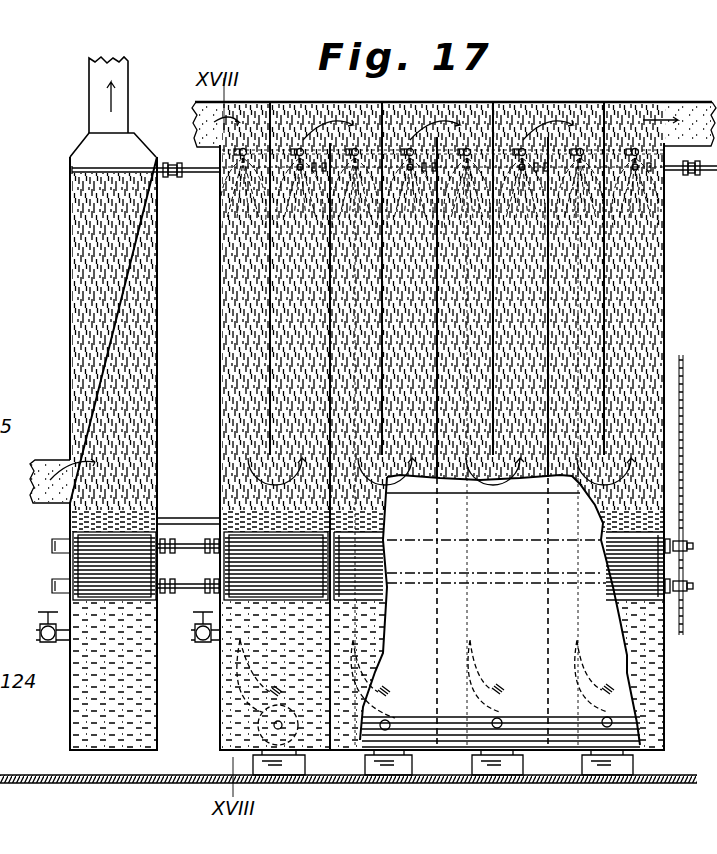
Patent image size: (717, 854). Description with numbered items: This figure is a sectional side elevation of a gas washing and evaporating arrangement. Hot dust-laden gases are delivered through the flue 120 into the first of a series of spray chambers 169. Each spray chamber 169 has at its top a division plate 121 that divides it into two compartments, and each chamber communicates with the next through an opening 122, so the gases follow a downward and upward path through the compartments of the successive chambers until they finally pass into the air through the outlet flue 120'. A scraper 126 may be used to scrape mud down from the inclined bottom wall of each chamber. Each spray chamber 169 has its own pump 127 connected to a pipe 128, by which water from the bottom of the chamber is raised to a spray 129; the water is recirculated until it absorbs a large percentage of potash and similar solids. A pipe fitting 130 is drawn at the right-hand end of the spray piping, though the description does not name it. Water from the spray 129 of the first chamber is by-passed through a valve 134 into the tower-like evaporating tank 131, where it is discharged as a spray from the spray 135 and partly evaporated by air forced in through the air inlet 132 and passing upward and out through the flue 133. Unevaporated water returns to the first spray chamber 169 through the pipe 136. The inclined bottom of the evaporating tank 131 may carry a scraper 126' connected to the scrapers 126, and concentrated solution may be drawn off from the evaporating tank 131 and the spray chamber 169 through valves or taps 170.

The flue 120 is at (447, 416).
The outlet flue 120' is at (674, 112).
The division plate 121 is at (272, 380).
The opening 122 is at (345, 122).
The scraper 126 is at (458, 495).
The scraper 126' is at (114, 566).
The pump 127 is at (262, 712).
The pipe 128 is at (372, 637).
The spray 129 is at (300, 102).
The water supply pipe 130 is at (706, 172).
The evaporating tank 131 is at (70, 320).
The air inlet 132 is at (55, 504).
The flue 133 is at (92, 107).
The valve 134 is at (172, 178).
The spray 135 is at (128, 147).
The pipe 136 is at (186, 512).
The spray chamber 169 is at (220, 340).
The valves or taps 170 is at (50, 642).